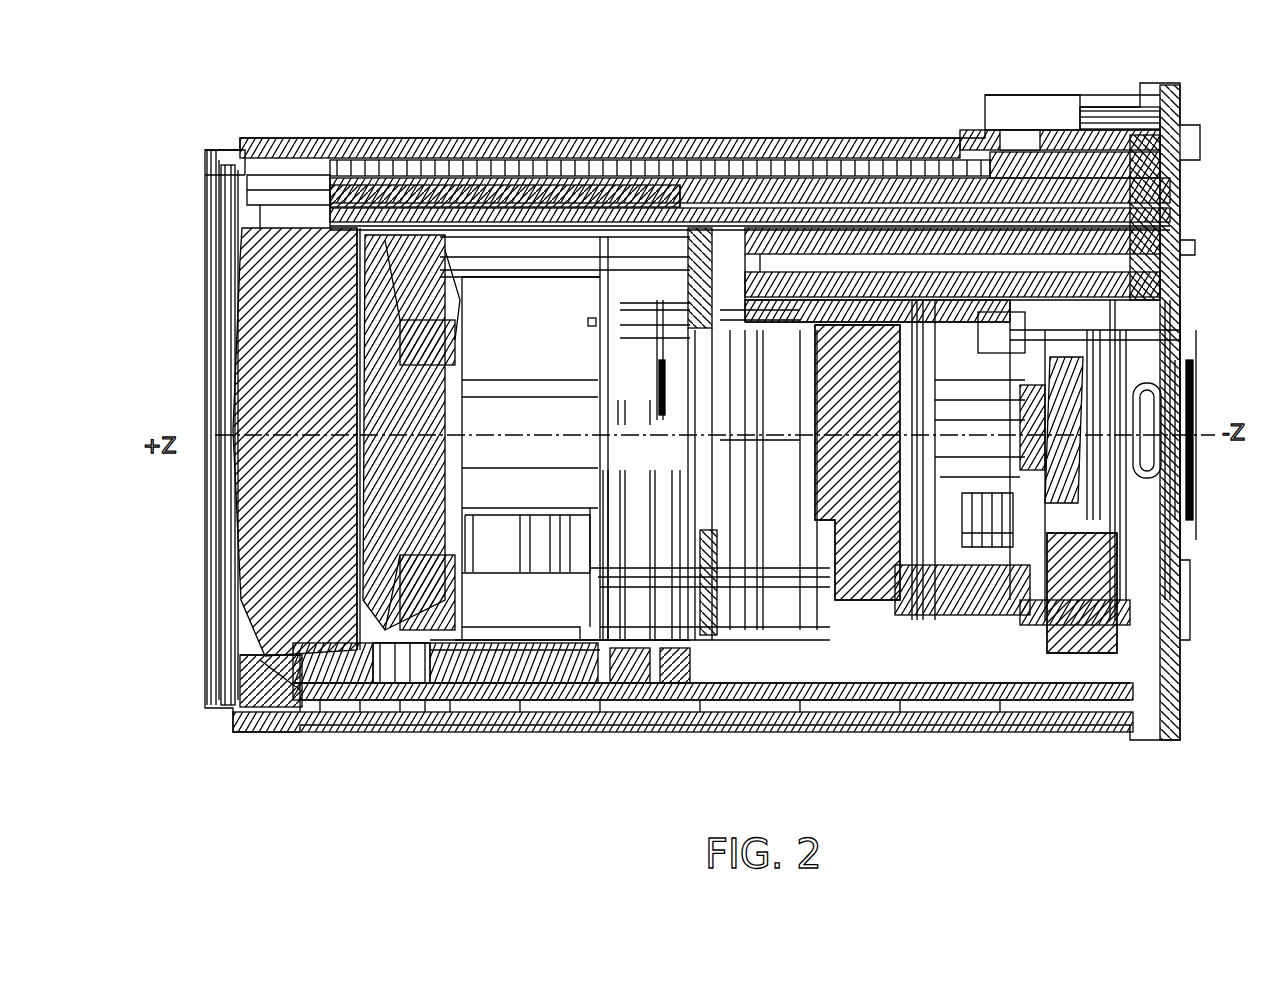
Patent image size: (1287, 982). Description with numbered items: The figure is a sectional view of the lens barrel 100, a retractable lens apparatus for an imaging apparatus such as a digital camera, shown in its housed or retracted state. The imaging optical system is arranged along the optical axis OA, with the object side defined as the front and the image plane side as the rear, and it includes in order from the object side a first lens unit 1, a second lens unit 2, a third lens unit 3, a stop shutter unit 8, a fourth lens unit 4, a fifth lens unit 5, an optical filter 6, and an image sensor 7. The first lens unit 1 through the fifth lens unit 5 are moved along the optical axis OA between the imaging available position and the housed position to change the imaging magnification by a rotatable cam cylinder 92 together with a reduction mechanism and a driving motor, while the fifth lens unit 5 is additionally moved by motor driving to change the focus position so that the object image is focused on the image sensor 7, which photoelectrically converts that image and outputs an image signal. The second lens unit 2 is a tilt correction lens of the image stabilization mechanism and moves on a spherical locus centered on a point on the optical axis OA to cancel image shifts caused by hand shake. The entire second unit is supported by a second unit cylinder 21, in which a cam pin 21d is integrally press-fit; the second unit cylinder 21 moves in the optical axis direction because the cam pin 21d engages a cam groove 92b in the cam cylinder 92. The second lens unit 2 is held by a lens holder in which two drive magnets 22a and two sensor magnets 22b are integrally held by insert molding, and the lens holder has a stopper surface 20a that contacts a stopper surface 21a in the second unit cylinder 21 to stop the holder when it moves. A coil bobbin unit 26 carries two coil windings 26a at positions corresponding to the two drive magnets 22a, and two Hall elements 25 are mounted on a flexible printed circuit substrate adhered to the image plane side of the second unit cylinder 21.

The lens barrel 100 is at (1222, 82).
The first lens unit 1 is at (212, 432).
The second lens unit 2 is at (375, 375).
The third lens unit 3 is at (800, 470).
The fourth lens unit 4 is at (955, 585).
The fifth lens unit 5 is at (1070, 640).
The optical filter 6 is at (1185, 405).
The image sensor 7 is at (1180, 455).
The stop shutter unit 8 is at (945, 300).
The stopper surface 20a is at (540, 165).
The second unit cylinder 21 is at (345, 160).
The stopper surface 21a is at (495, 165).
The cam pin 21d is at (598, 700).
The drive magnet 22a is at (410, 725).
The sensor magnet 22b is at (362, 163).
The Hall element 25 is at (455, 165).
The coil bobbin unit 26 is at (505, 660).
The coil winding 26a is at (470, 660).
The cam cylinder 92 is at (686, 160).
The cam groove 92b is at (605, 710).
The optical axis OA is at (762, 440).